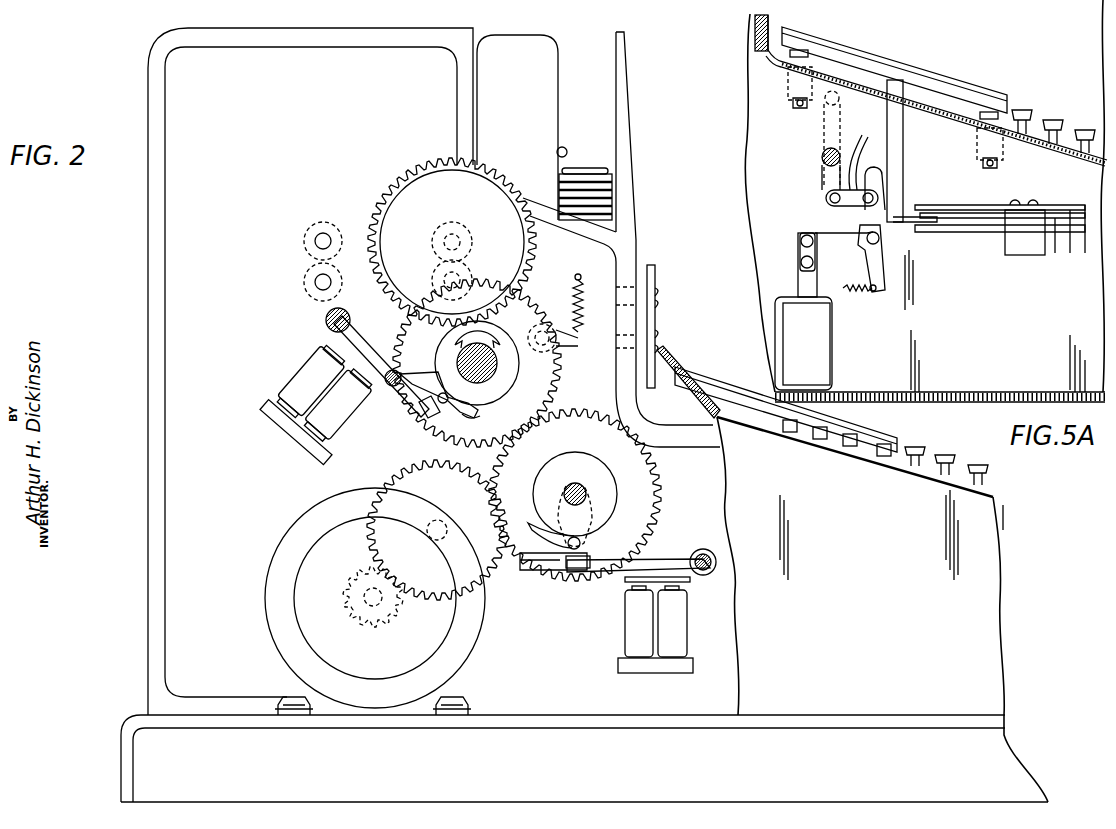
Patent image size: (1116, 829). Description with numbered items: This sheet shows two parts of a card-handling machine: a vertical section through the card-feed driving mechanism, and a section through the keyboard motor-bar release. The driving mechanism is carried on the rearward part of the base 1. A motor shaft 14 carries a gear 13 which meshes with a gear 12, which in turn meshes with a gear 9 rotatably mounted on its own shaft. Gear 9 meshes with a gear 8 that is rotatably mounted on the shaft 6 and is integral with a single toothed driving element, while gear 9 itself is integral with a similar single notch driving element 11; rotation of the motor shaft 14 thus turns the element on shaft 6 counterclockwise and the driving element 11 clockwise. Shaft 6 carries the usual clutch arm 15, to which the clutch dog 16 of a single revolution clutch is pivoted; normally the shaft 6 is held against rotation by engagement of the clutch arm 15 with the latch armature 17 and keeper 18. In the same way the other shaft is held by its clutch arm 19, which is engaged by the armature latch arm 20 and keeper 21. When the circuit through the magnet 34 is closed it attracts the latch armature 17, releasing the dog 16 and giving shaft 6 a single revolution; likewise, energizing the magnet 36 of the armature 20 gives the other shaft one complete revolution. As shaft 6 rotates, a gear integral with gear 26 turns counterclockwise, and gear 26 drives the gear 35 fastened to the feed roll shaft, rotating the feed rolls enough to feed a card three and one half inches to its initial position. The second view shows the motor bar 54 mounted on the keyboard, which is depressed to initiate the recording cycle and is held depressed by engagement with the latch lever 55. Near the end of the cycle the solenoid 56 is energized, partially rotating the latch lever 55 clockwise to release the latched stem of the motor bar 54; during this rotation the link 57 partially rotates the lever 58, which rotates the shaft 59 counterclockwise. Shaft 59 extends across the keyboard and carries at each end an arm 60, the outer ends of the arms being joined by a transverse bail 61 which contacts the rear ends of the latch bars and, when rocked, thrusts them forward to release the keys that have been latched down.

In FIG. 2, the base 1 is at (133, 726).
In FIG. 2, the shaft 6 is at (497, 367).
In FIG. 2, the gear 8 is at (525, 385).
In FIG. 2, the gear 9 is at (578, 426).
In FIG. 2, the single notch driving element 11 is at (606, 501).
In FIG. 2, the gear 12 is at (487, 563).
In FIG. 2, the gear 13 is at (354, 567).
In FIG. 2, the motor shaft 14 is at (360, 606).
In FIG. 2, the clutch arm 15 is at (438, 377).
In FIG. 2, the dog 16 is at (477, 418).
In FIG. 2, the latch armature 17 is at (427, 415).
In FIG. 2, the keeper 18 is at (402, 390).
In FIG. 2, the clutch arm 19 is at (622, 568).
In FIG. 2, the armature latch arm 20 is at (566, 571).
In FIG. 2, the keeper 21 is at (592, 568).
In FIG. 2, the gear 26 is at (503, 330).
In FIG. 2, the magnet 34 is at (296, 394).
In FIG. 2, the gear 35 is at (405, 203).
In FIG. 2, the magnet 36 is at (645, 627).
In FIG. 2, the motor bar 54 is at (720, 387).
In FIG. 5A, the motor bar 54 is at (940, 82).
In FIG. 5A, the latch lever 55 is at (875, 174).
In FIG. 5A, the solenoid 56 is at (822, 343).
In FIG. 5A, the link 57 is at (850, 188).
In FIG. 5A, the lever 58 is at (821, 179).
In FIG. 5A, the shaft 59 is at (821, 156).
In FIG. 5A, the arm 60 is at (822, 120).
In FIG. 5A, the transverse bail 61 is at (840, 102).